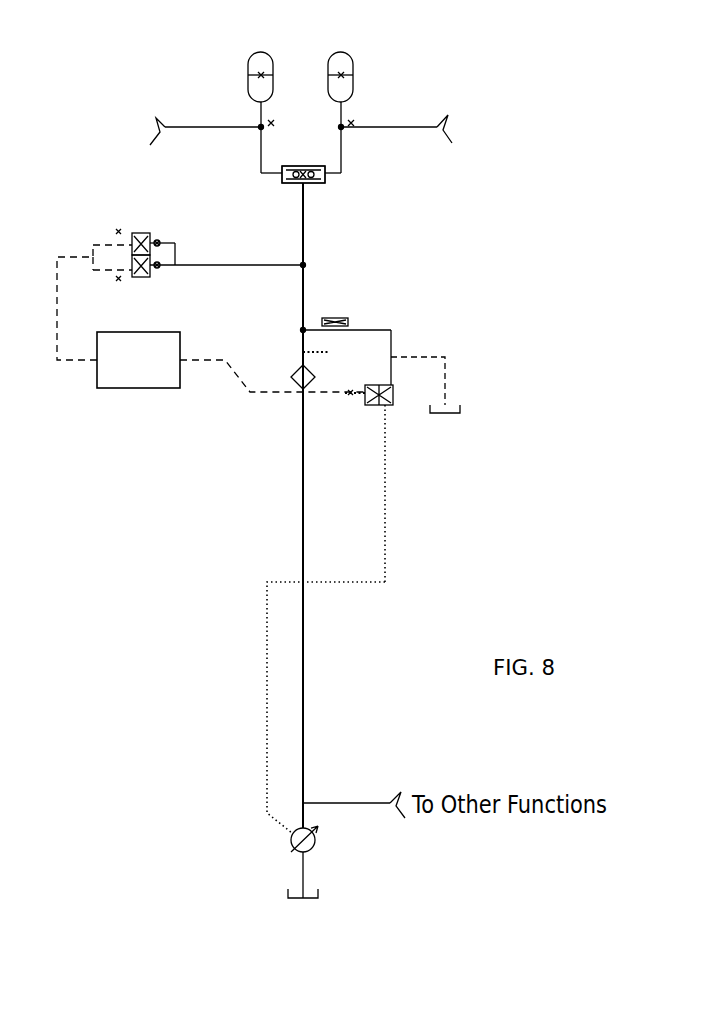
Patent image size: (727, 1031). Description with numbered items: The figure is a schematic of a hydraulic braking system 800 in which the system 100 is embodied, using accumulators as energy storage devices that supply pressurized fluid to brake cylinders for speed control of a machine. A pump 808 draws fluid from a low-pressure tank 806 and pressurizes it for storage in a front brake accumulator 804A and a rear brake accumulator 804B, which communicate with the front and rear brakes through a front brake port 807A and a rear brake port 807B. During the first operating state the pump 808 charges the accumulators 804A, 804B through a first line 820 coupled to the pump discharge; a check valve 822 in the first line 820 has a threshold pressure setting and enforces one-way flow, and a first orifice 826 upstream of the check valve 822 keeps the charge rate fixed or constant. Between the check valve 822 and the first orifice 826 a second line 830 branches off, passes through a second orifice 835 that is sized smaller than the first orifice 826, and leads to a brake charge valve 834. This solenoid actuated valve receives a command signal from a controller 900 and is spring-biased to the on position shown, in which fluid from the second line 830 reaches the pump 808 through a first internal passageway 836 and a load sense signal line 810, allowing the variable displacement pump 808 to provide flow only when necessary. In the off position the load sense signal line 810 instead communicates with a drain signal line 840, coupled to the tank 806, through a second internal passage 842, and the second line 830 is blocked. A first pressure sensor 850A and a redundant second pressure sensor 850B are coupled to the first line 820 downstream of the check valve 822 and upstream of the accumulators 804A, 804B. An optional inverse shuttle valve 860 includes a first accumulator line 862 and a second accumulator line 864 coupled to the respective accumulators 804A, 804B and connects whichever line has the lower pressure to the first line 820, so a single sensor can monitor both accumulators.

The system 100 is at (190, 440).
The hydraulic braking system 800 is at (445, 228).
The front brake accumulator 804A is at (274, 62).
The rear brake accumulator 804B is at (354, 58).
The tank 806 is at (461, 413).
The front brake port 807A is at (261, 125).
The rear brake port 807B is at (343, 127).
The pump 808 is at (316, 843).
The load sense signal line 810 is at (268, 696).
The first line 820 is at (304, 650).
The check valve 822 is at (301, 330).
The first orifice 826 is at (302, 352).
The second line 830 is at (391, 330).
The brake charge valve 834 is at (368, 406).
The second orifice 835 is at (336, 327).
The first internal passageway 836 is at (393, 405).
The drain signal line 840 is at (446, 358).
The second internal passage 842 is at (368, 386).
The first pressure sensor 850A is at (152, 233).
The second pressure sensor 850B is at (150, 276).
The inverse shuttle valve 860 is at (314, 184).
The first accumulator line 862 is at (262, 175).
The second accumulator line 864 is at (342, 172).
The controller 900 is at (211, 320).